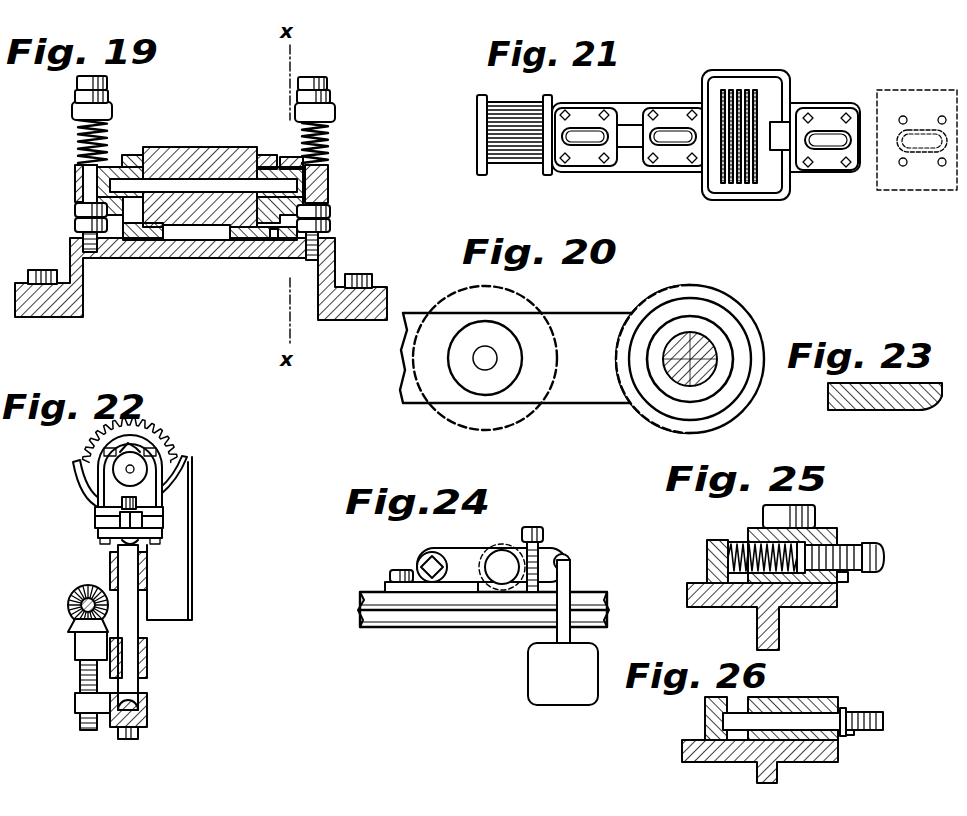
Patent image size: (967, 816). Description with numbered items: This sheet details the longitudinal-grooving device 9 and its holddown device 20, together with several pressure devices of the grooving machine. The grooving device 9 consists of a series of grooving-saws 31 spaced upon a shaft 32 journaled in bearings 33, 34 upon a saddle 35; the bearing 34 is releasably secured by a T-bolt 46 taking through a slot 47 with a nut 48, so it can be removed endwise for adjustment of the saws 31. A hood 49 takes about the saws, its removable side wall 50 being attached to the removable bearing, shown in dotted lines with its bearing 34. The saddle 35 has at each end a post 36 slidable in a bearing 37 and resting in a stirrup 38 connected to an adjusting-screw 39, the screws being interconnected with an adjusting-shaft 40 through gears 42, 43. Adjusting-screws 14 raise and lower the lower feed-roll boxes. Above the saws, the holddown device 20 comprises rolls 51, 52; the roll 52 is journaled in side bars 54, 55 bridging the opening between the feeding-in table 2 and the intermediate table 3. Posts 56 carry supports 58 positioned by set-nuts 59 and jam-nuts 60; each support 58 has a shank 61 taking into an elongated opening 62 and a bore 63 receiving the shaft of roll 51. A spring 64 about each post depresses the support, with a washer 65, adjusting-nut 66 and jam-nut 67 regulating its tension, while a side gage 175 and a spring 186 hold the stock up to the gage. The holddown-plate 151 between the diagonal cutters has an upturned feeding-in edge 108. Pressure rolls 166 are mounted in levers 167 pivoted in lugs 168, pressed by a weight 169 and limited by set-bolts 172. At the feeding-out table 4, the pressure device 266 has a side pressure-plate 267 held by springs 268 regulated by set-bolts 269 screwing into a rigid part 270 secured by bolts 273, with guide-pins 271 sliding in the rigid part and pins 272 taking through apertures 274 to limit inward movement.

In FIG. 19, the feeding-in table 2 is at (215, 243).
In FIG. 24, the intermediate table 3 is at (396, 623).
In FIG. 25, the feeding-out table 4 is at (745, 604).
In FIG. 26, the feeding-out table 4 is at (681, 750).
In FIG. 21, the longitudinal-grooving device 9 is at (755, 45).
In FIG. 22, the longitudinal-grooving device 9 is at (50, 445).
In FIG. 21, the adjusting-screws 14 is at (477, 119).
In FIG. 19, the holddown device 20 is at (198, 83).
In FIG. 20, the holddown device 20 is at (609, 276).
In FIG. 21, the grooving-saws 31 is at (737, 184).
In FIG. 22, the grooving-saws 31 is at (165, 440).
In FIG. 21, the shaft 32 is at (628, 128).
In FIG. 22, the shaft 32 is at (113, 479).
In FIG. 21, the bearing 33 is at (585, 152).
In FIG. 21, the bearing 34 is at (830, 160).
In FIG. 22, the bearing 34 is at (105, 482).
In FIG. 21, the saddle 35 is at (628, 165).
In FIG. 22, the saddle 35 is at (150, 522).
In FIG. 22, the post 36 is at (135, 628).
In FIG. 22, the bearing 37 is at (148, 575).
In FIG. 22, the stirrup 38 is at (84, 702).
In FIG. 22, the adjusting-screw 39 is at (79, 672).
In FIG. 22, the adjusting-shaft 40 is at (67, 604).
In FIG. 22, the gear 42 is at (82, 588).
In FIG. 22, the gear 43 is at (72, 626).
In FIG. 22, the T-bolt 46 is at (140, 545).
In FIG. 22, the slot 47 is at (112, 525).
In FIG. 22, the nut 48 is at (140, 504).
In FIG. 21, the hood 49 is at (712, 76).
In FIG. 22, the hood 49 is at (180, 462).
In FIG. 21, the removable side wall 50 is at (788, 97).
In FIG. 22, the removable side wall 50 is at (172, 484).
In FIG. 19, the roll 51 is at (188, 147).
In FIG. 20, the roll 51 is at (737, 305).
In FIG. 20, the roll 52 is at (523, 308).
In FIG. 19, the side bar 54 is at (262, 155).
In FIG. 20, the side bar 54 is at (531, 358).
In FIG. 19, the side bar 55 is at (141, 152).
In FIG. 19, the post 56 is at (82, 170).
In FIG. 19, the support 58 is at (76, 209).
In FIG. 20, the support 58 is at (703, 385).
In FIG. 19, the set-nut 59 is at (77, 226).
In FIG. 19, the jam-nut 60 is at (78, 232).
In FIG. 19, the shank 61 is at (139, 155).
In FIG. 20, the shank 61 is at (670, 379).
In FIG. 19, the elongated opening 62 is at (117, 162).
In FIG. 20, the elongated opening 62 is at (652, 350).
In FIG. 19, the bore 63 is at (288, 157).
In FIG. 20, the bore 63 is at (695, 343).
In FIG. 19, the spring 64 is at (79, 140).
In FIG. 19, the washer 65 is at (73, 112).
In FIG. 19, the adjusting-nut 66 is at (76, 96).
In FIG. 19, the jam-nut 67 is at (107, 83).
In FIG. 23, the upturned feeding-in edge 108 is at (935, 406).
In FIG. 23, the holddown-plate 151 is at (829, 406).
In FIG. 24, the roll 166 is at (492, 548).
In FIG. 24, the lever 167 is at (460, 555).
In FIG. 24, the lug 168 is at (445, 584).
In FIG. 24, the weight 169 is at (540, 683).
In FIG. 24, the set-bolt 172 is at (541, 527).
In FIG. 19, the side gage 175 is at (148, 240).
In FIG. 24, the side gage 175 is at (382, 598).
In FIG. 19, the spring 186 is at (262, 214).
In FIG. 25, the pressure device 266 is at (834, 627).
In FIG. 26, the pressure device 266 is at (864, 775).
In FIG. 25, the side pressure-plate 267 is at (707, 560).
In FIG. 26, the side pressure-plate 267 is at (705, 708).
In FIG. 25, the spring 268 is at (740, 548).
In FIG. 25, the set-bolt 269 is at (893, 537).
In FIG. 25, the rigid part 270 is at (848, 522).
In FIG. 26, the rigid part 270 is at (790, 697).
In FIG. 25, the guide-pin 271 is at (848, 578).
In FIG. 26, the guide-pin 271 is at (890, 705).
In FIG. 26, the pin 272 is at (845, 710).
In FIG. 25, the bolt 273 is at (812, 502).
In FIG. 26, the aperture 274 is at (855, 732).